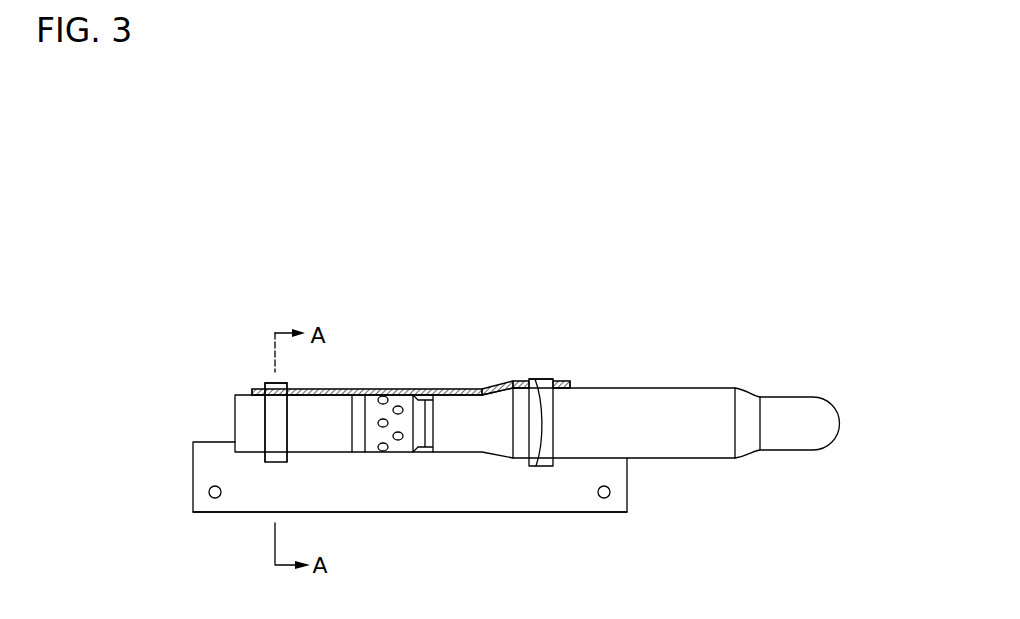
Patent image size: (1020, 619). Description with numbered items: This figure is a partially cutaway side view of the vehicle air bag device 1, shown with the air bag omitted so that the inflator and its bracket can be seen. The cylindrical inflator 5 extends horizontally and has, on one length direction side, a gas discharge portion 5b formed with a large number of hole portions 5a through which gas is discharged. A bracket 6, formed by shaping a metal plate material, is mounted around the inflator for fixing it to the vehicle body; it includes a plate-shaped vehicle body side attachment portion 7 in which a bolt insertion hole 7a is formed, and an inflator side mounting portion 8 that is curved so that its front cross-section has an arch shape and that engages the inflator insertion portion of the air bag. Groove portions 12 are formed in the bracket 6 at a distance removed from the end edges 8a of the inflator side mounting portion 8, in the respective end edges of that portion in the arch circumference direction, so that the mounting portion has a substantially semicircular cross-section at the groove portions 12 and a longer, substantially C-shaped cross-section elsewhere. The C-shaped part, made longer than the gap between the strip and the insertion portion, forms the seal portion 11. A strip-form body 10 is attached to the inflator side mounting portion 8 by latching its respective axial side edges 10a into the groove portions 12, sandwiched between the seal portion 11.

The vehicle air bag device 1 is at (740, 318).
The inflator 5 is at (537, 457).
The hole portions 5a is at (384, 393).
The gas discharge portion 5b is at (372, 447).
The bracket 6 is at (556, 535).
The vehicle body side attachment portion 7 is at (410, 524).
The bolt insertion hole 7a is at (605, 499).
The inflator side mounting portion 8 is at (368, 380).
The end edges 8a is at (258, 391).
The strip-form body 10 is at (418, 479).
The axial side edges 10a is at (264, 420).
The seal portion 11 is at (259, 391).
The groove portions 12 is at (272, 383).